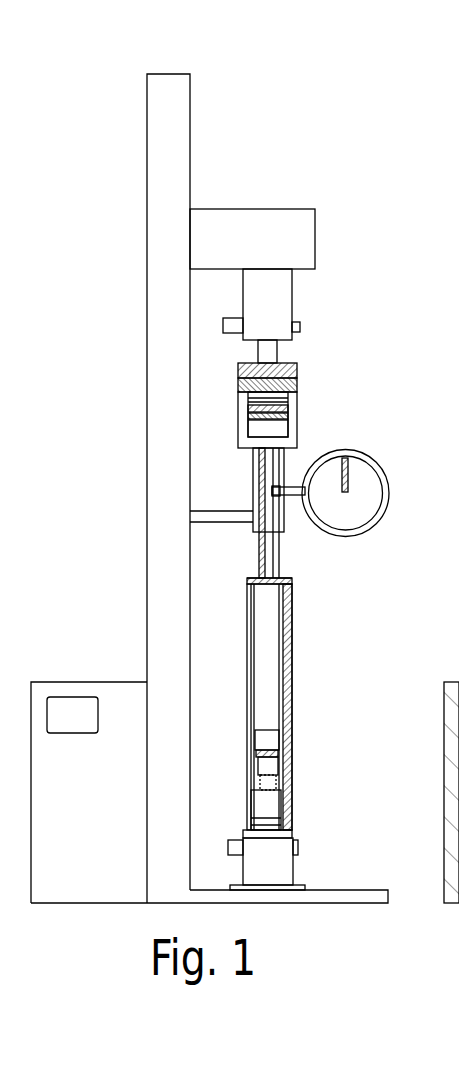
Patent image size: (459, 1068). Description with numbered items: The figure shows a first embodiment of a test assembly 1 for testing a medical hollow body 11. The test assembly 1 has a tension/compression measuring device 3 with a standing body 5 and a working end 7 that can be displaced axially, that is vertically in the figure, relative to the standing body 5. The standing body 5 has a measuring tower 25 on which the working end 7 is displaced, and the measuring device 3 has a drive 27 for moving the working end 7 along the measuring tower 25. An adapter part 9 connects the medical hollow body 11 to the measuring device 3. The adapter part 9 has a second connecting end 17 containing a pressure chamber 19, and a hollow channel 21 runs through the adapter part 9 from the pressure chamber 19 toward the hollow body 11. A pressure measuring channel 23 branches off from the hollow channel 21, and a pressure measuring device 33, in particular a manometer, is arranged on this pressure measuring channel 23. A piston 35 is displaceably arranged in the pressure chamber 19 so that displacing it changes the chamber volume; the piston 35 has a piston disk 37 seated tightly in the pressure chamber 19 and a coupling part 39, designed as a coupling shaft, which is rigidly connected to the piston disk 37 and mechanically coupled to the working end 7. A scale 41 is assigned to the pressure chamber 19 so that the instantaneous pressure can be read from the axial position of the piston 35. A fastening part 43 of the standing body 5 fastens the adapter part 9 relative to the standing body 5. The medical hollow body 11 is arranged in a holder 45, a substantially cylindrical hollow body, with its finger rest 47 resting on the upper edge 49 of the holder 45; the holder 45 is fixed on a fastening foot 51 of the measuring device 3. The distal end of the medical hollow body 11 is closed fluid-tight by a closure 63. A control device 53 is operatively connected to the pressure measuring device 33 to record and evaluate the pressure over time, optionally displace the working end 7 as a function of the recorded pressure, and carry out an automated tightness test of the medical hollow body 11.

The test assembly 1 is at (262, 112).
The tension/compression measuring device 3 is at (113, 78).
The standing body 5 is at (145, 413).
The working end 7 is at (295, 295).
The adapter part 9 is at (342, 420).
The medical hollow body 11 is at (270, 690).
The second connecting end 17 is at (310, 405).
The pressure chamber 19 is at (278, 432).
The hollow channel 21 is at (268, 565).
The pressure measuring channel 23 is at (288, 497).
The measuring tower 25 is at (162, 275).
The drive 27 is at (105, 682).
The pressure measuring device 33 is at (389, 492).
The piston 35 is at (288, 395).
The piston disk 37 is at (250, 403).
The coupling part 39 is at (275, 352).
The scale 41 is at (298, 368).
The fastening part 43 is at (225, 512).
The holder 45 is at (293, 732).
The finger rest 47 is at (292, 582).
The upper edge 49 is at (295, 585).
The fastening foot 51 is at (293, 875).
The control device 53 is at (63, 697).
The closure 63 is at (275, 808).